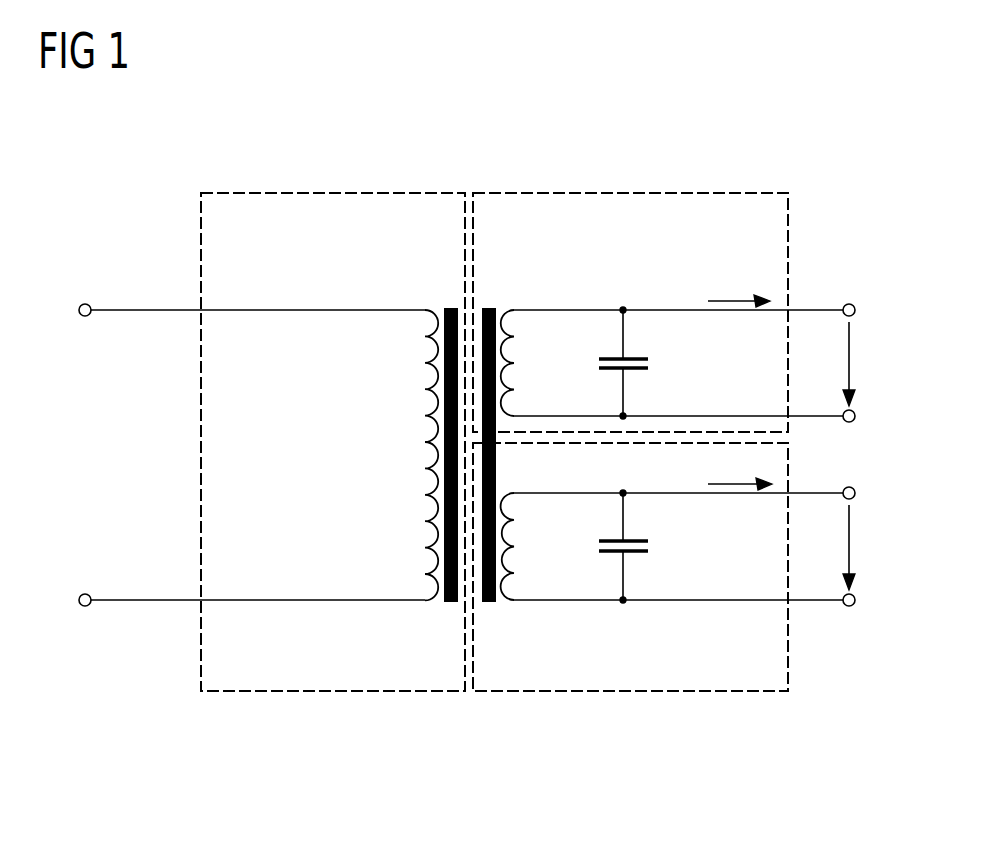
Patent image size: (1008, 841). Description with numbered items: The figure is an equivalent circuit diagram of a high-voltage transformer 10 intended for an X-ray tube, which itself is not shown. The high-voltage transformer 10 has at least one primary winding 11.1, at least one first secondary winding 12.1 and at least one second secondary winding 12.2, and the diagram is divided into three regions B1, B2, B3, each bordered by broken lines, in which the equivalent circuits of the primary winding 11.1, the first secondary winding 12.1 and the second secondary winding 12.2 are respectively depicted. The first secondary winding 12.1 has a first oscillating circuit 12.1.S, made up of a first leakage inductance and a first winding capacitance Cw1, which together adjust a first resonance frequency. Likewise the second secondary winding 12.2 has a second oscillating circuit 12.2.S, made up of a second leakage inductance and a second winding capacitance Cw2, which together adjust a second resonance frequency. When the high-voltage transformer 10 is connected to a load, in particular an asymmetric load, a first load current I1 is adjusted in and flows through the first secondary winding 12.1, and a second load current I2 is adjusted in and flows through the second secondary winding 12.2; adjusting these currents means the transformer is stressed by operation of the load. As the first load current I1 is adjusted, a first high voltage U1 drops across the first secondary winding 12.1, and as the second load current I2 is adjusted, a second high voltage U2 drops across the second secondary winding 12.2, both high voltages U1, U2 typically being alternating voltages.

The high-voltage transformer 10 is at (148, 256).
The primary winding 11.1 is at (333, 400).
The region B1 is at (330, 193).
The first secondary winding 12.1 is at (630, 271).
The region B2 is at (685, 193).
The second secondary winding 12.2 is at (630, 613).
The region B3 is at (679, 692).
The first oscillating circuit 12.1.S is at (563, 304).
The second oscillating circuit 12.2.S is at (563, 605).
The first winding capacitance Cw1 is at (633, 357).
The second winding capacitance Cw2 is at (633, 555).
The first load current I1 is at (739, 284).
The second load current I2 is at (740, 467).
The first high voltage U1 is at (866, 364).
The second high voltage U2 is at (866, 547).